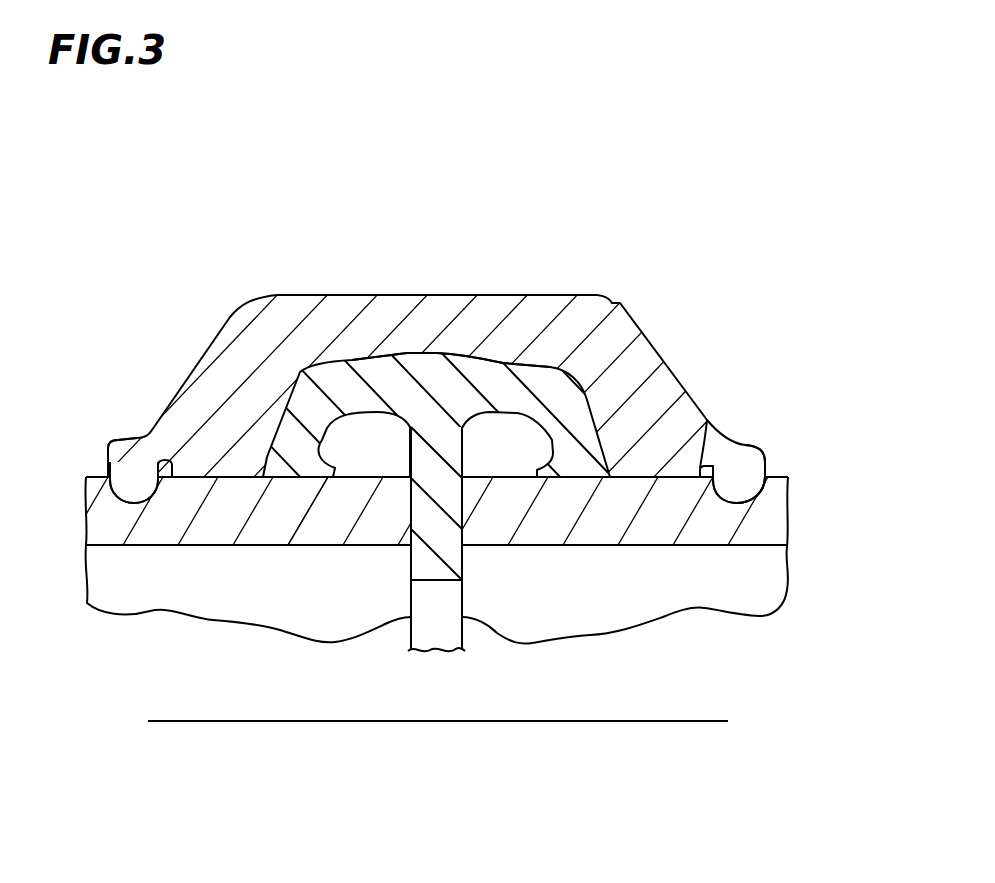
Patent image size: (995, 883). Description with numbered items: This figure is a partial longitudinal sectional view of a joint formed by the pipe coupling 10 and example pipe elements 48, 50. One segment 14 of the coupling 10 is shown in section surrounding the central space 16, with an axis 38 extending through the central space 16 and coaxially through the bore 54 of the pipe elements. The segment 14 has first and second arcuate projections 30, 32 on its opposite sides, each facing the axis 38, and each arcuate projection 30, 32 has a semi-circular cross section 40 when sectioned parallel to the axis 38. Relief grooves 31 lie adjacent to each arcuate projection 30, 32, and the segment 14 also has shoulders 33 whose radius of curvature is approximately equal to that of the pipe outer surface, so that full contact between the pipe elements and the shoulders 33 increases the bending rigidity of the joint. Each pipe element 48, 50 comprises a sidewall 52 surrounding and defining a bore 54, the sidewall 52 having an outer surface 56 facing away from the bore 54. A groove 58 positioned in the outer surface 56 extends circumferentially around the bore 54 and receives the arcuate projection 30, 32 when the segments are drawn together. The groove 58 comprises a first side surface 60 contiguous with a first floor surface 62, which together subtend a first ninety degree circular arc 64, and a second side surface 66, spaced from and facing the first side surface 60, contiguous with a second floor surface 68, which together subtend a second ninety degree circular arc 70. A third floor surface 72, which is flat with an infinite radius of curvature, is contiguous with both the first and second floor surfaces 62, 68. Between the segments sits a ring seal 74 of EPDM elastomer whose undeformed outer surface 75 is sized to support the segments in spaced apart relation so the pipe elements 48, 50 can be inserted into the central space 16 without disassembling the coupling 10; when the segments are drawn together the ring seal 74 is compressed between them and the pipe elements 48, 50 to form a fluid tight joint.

The pipe coupling 10 is at (577, 262).
The segment 14 is at (626, 306).
The central space 16 is at (383, 805).
The first arcuate projection 30 is at (125, 485).
The relief grooves 31 is at (160, 477).
The second arcuate projection 32 is at (748, 463).
The shoulders 33 is at (213, 476).
The axis 38 is at (557, 722).
The semi-circular cross section 40 is at (127, 505).
The pipe element 48 is at (428, 560).
The pipe element 50 is at (578, 547).
The sidewall 52 is at (350, 530).
The bore 54 is at (408, 700).
The outer surface 56 is at (383, 481).
The groove 58 is at (157, 497).
The first side surface 60 is at (708, 482).
The first floor surface 62 is at (748, 463).
The first 90° circular arc 64 is at (708, 503).
The second side surface 66 is at (788, 481).
The second floor surface 68 is at (763, 492).
The second 90° circular arc 70 is at (763, 488).
The third floor surface 72 is at (738, 447).
The ring seal 74 is at (417, 364).
The outer surface 75 is at (457, 354).